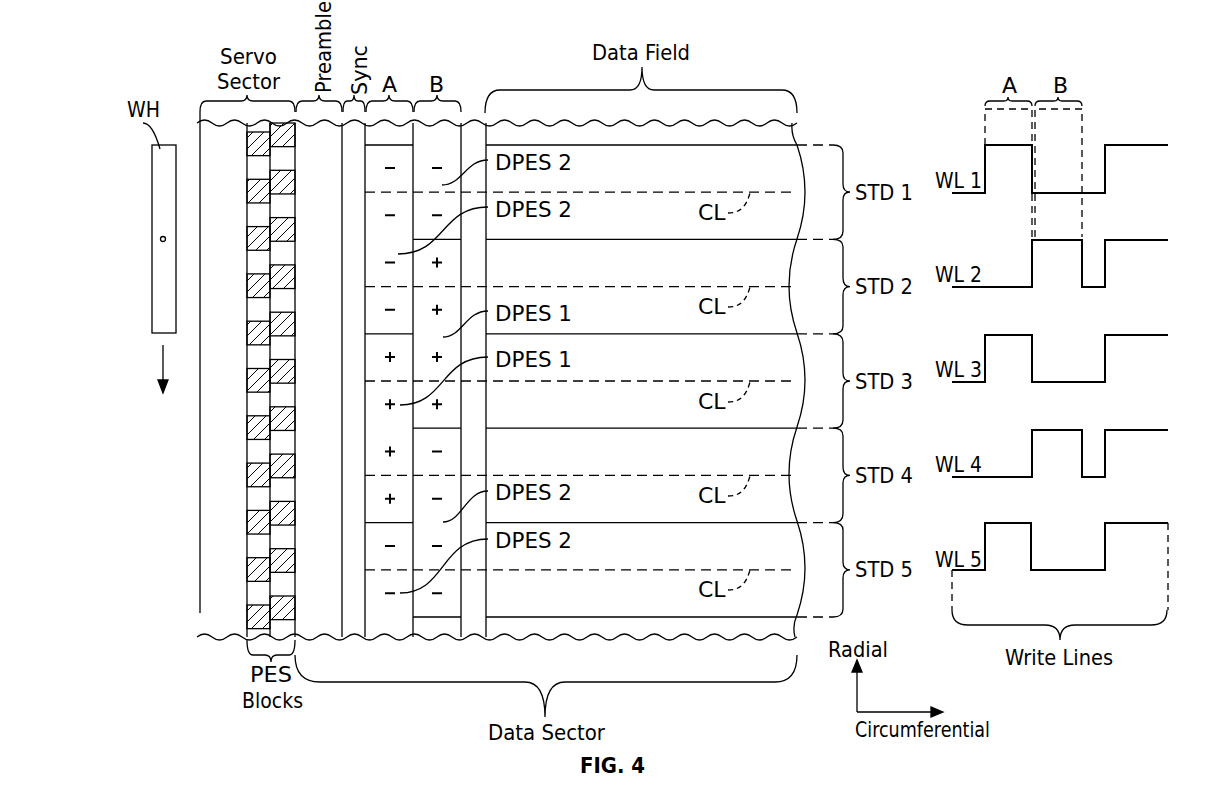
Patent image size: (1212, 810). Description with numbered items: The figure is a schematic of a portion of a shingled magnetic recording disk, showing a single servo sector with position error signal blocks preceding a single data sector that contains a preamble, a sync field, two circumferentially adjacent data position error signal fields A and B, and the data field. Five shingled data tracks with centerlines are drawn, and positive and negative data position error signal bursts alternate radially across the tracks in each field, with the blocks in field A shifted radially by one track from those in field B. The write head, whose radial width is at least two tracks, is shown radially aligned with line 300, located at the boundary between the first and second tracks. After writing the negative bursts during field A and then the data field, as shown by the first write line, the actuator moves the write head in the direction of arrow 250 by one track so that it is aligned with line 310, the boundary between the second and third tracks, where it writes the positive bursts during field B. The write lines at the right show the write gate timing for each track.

The line 300 is at (140, 239).
The line 310 is at (140, 334).
The arrow 250 is at (162, 365).